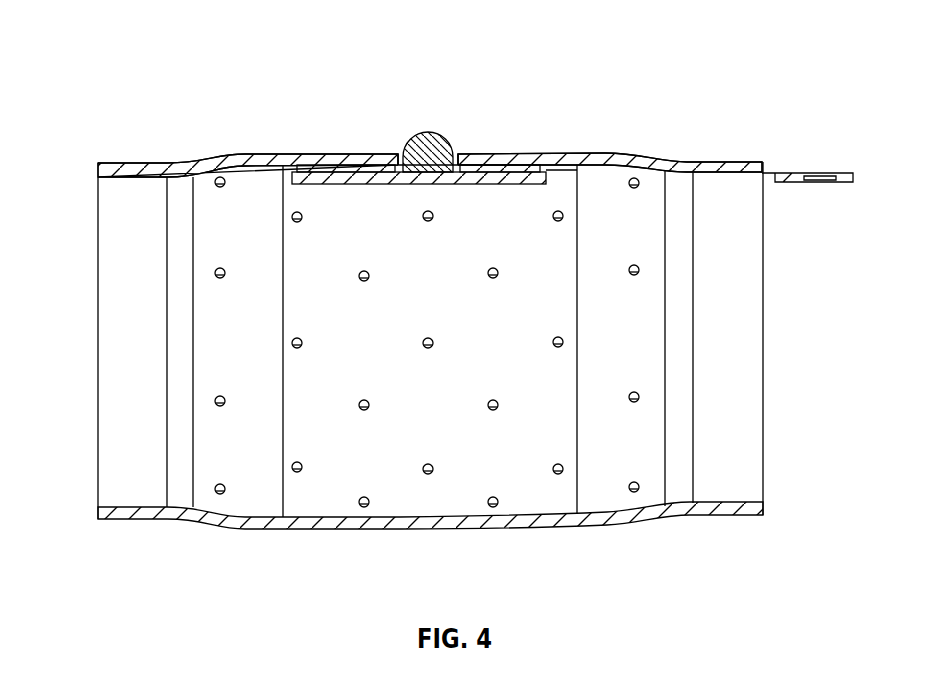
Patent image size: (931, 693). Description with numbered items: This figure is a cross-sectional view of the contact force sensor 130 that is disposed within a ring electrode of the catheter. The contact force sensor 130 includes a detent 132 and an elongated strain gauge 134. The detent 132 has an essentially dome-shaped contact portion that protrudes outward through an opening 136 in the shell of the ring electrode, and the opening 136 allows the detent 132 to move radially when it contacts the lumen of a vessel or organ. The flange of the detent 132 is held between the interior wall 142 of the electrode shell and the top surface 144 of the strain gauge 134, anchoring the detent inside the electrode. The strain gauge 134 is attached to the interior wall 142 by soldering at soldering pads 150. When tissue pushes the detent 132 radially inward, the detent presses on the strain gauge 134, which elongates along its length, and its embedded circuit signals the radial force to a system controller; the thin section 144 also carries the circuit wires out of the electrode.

The contact force sensor 130 is at (268, 66).
The detent 132 is at (440, 140).
The strain gauge 134 is at (823, 172).
The opening 136 is at (398, 159).
The interior wall 142 is at (118, 186).
The top surface 144 is at (343, 174).
The soldering pads 150 is at (308, 168).